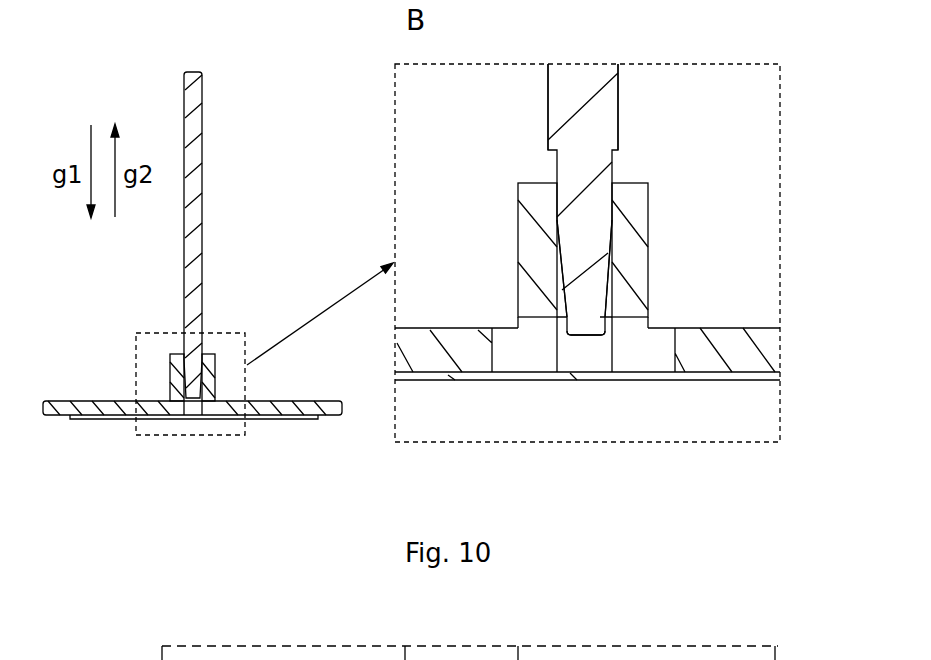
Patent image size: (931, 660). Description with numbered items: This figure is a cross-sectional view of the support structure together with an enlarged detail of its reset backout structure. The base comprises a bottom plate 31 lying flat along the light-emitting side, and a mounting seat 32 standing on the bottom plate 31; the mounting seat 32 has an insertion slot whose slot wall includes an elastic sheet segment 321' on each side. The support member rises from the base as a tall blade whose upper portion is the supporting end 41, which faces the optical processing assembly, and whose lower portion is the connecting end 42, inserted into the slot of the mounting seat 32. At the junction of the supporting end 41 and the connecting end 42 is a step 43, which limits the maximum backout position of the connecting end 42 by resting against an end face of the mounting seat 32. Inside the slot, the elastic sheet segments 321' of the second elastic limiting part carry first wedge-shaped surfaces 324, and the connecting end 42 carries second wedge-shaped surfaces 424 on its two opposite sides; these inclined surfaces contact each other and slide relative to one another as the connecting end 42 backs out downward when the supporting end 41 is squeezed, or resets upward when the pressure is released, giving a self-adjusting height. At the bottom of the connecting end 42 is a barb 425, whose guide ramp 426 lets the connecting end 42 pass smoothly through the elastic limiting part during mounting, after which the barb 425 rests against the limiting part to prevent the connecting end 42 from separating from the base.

The bottom plate 31 is at (82, 404).
The mounting seat 32 is at (173, 353).
The supporting end 41 is at (194, 184).
The connecting end 42 is at (193, 370).
The step 43 is at (540, 165).
The elastic sheet segment 321' is at (602, 238).
The first wedge-shaped surface 324 is at (600, 277).
The second wedge-shaped surface 424 is at (614, 253).
The barb 425 is at (600, 327).
The guide ramp 426 is at (556, 338).